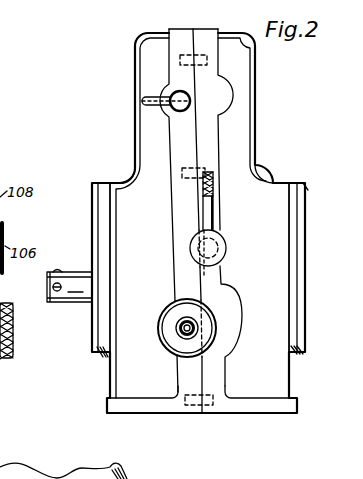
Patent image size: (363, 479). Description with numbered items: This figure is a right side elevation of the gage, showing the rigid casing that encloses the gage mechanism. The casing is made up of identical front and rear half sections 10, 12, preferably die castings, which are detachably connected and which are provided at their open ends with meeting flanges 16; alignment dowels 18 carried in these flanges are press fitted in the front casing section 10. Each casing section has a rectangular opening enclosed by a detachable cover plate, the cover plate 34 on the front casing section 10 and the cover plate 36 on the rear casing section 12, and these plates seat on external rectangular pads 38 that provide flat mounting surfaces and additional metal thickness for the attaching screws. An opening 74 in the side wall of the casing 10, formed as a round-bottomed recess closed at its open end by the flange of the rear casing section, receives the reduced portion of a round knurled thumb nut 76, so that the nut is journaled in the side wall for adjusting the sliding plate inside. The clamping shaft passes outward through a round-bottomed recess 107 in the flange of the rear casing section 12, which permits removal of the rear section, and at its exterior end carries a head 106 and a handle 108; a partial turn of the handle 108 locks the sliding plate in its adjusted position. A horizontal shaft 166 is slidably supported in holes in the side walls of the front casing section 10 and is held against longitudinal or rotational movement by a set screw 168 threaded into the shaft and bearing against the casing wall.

The front casing half section 10 is at (135, 88).
The rear casing half section 12 is at (257, 100).
The meeting flanges 16 is at (207, 29).
The alignment dowels 18 is at (192, 76).
The front cover plate 34 is at (97, 213).
The rear cover plate 36 is at (302, 254).
The external rectangular pads 38 is at (101, 184).
The opening 74 is at (200, 299).
The knurled thumb nut 76 is at (2, 362).
The head 106 is at (227, 243).
The round-bottomed recess 107 is at (226, 262).
The handle 108 is at (214, 196).
The horizontal shaft 166 is at (182, 111).
The set screw 168 is at (153, 94).